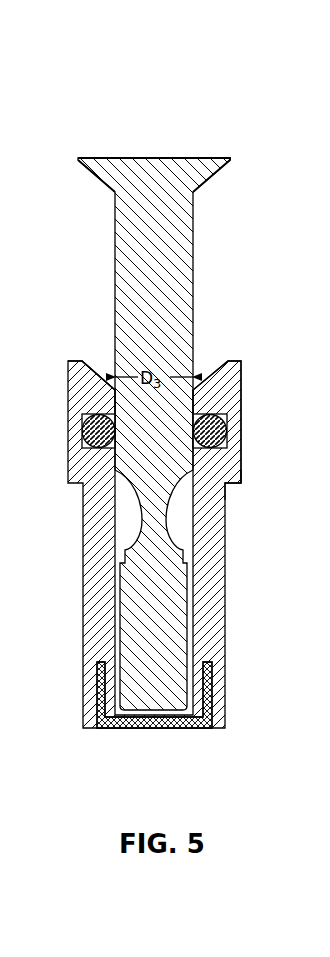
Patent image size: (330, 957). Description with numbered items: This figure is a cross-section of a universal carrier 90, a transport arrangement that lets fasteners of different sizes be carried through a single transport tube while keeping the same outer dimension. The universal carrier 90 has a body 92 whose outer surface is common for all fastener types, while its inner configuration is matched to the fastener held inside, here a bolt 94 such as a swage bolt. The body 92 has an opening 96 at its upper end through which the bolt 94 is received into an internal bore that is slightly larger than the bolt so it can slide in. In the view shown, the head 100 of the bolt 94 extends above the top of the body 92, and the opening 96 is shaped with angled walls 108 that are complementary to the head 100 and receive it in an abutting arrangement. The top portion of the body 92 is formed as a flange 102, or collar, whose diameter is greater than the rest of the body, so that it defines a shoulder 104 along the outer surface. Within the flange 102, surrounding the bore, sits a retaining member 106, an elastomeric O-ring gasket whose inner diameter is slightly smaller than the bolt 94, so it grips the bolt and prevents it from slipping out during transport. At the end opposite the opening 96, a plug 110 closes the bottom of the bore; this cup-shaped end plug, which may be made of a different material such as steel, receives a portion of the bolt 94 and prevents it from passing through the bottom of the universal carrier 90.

The universal carrier 90 is at (116, 99).
The body 92 is at (225, 576).
The bolt 94 is at (193, 224).
The opening 96 is at (219, 335).
The head 100 is at (205, 158).
The flange 102 is at (241, 393).
The shoulder 104 is at (234, 486).
The retaining member 106 is at (226, 440).
The angled walls 108 is at (98, 378).
The plug 110 is at (138, 730).